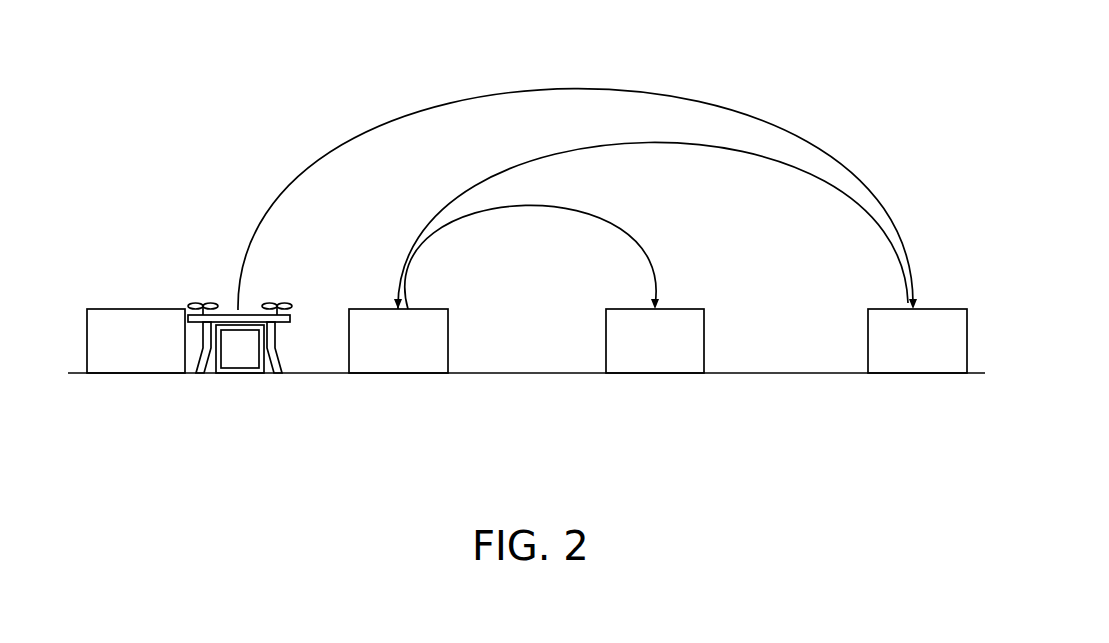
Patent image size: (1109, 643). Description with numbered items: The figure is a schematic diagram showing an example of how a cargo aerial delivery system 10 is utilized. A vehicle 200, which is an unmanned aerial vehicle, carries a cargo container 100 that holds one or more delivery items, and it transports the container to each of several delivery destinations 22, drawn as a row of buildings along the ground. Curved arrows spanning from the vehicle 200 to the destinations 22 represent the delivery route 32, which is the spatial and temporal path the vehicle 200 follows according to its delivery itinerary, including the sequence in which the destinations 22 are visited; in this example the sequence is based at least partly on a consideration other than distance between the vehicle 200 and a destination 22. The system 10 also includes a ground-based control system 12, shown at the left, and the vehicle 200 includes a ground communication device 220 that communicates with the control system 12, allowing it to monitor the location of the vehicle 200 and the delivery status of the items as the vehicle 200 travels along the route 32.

The cargo aerial delivery system 10 is at (209, 74).
The ground-based control system 12 is at (135, 309).
The delivery destination 22 is at (448, 343).
The delivery route 32 is at (578, 85).
The cargo container 100 is at (238, 373).
The vehicle 200 is at (232, 312).
The ground communication device 220 is at (252, 312).